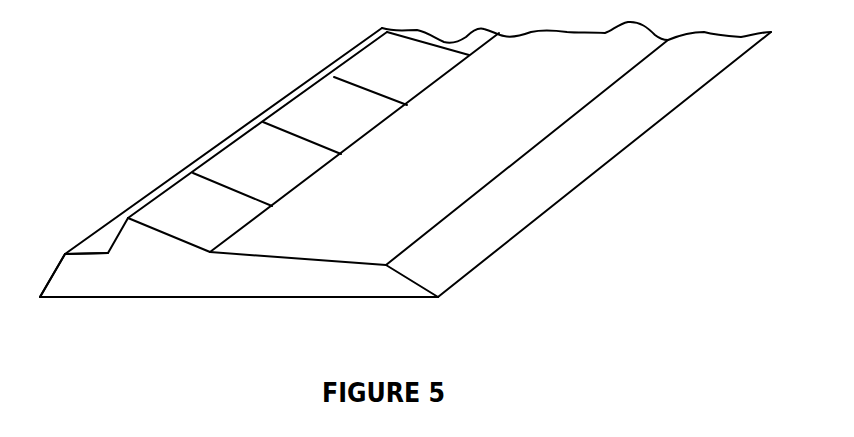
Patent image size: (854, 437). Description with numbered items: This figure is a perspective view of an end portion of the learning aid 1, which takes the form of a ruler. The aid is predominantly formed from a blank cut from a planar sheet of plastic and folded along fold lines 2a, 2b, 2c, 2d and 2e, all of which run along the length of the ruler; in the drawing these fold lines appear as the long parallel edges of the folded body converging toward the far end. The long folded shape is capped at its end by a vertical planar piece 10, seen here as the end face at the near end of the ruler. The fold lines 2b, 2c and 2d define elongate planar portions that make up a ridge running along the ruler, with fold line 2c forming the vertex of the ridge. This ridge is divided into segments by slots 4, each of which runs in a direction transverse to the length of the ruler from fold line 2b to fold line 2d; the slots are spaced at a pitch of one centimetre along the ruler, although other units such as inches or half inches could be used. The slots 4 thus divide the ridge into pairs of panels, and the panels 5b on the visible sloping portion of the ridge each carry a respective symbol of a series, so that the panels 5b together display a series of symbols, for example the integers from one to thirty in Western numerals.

The learning aid 1 is at (640, 152).
The fold line 2a is at (96, 220).
The fold line 2b is at (108, 253).
The fold line 2c is at (128, 214).
The fold line 2d is at (208, 253).
The fold line 2e is at (386, 265).
The slots 4 is at (212, 178).
The panels 5b is at (177, 230).
The vertical planar pieces 10 is at (93, 278).